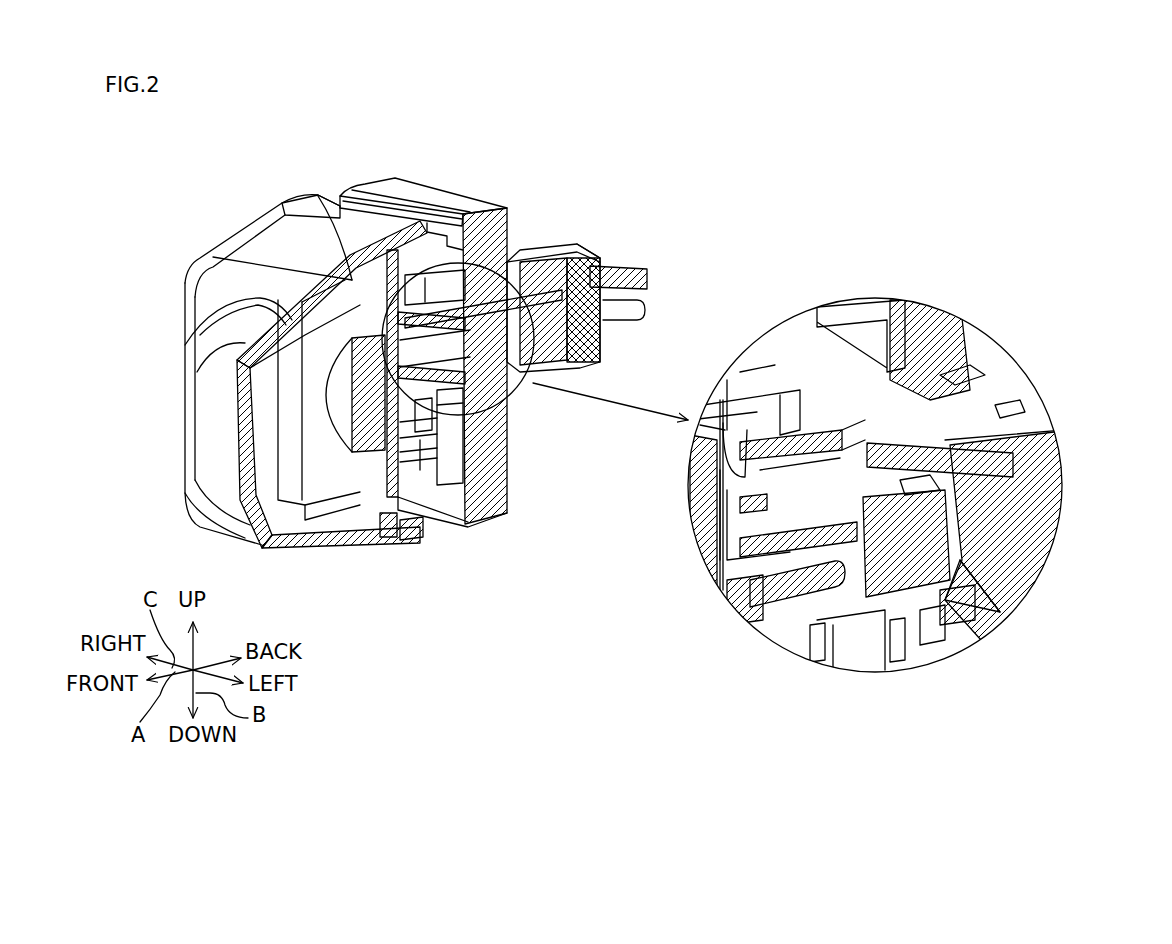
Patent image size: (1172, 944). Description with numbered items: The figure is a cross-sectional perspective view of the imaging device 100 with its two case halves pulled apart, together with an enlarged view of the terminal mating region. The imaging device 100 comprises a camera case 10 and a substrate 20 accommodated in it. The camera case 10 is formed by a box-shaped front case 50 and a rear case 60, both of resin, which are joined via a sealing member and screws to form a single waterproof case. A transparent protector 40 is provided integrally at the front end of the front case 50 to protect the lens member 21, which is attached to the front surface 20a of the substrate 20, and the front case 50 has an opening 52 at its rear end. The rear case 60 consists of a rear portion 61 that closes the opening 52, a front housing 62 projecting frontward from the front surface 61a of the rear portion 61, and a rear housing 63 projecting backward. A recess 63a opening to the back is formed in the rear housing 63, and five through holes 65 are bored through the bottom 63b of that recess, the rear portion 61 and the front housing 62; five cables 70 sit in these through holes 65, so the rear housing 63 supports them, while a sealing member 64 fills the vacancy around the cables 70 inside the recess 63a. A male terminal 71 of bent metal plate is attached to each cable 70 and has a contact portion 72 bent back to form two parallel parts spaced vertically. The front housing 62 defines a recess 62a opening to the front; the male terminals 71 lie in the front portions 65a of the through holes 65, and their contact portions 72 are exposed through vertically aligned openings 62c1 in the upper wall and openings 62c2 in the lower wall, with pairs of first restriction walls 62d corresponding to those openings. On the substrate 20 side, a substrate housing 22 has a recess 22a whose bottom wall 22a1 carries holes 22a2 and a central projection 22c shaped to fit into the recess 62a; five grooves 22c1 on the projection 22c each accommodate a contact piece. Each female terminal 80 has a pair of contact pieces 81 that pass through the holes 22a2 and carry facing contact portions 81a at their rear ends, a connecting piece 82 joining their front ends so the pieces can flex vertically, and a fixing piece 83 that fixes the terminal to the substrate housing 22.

The camera case 10 is at (352, 93).
The imaging device 100 is at (555, 126).
The front case 50 is at (268, 165).
The rear case 60 is at (362, 155).
The rear portion 61 is at (453, 185).
The front surface 61a is at (848, 408).
The front housing 62 is at (493, 432).
The recess 62a is at (980, 577).
The openings 62c1 is at (970, 362).
The openings 62c2 is at (935, 635).
The first restriction walls 62d is at (940, 377).
The rear housing 63 is at (567, 237).
The recess 63a is at (610, 270).
The bottom 63b is at (532, 378).
The sealing member 64 is at (600, 350).
The through holes 65 is at (525, 303).
The front portions 65a is at (1013, 390).
The cables 70 is at (642, 318).
The male terminal 71 is at (990, 470).
The contact portion 72 is at (977, 623).
The protector 40 is at (205, 447).
The substrate 20 is at (367, 510).
The front surface 20a is at (322, 473).
The lens member 21 is at (353, 443).
The opening 52 is at (405, 500).
The substrate housing 22 is at (457, 453).
The recess 22a is at (806, 430).
The bottom wall 22a1 is at (757, 418).
The holes 22a2 is at (697, 420).
The projection 22c is at (903, 653).
The grooves 22c1 is at (820, 640).
The female terminals 80 is at (613, 462).
The contact pieces 81 is at (720, 500).
The contact portions 81a is at (775, 633).
The connecting piece 82 is at (725, 482).
The fixing piece 83 is at (725, 570).